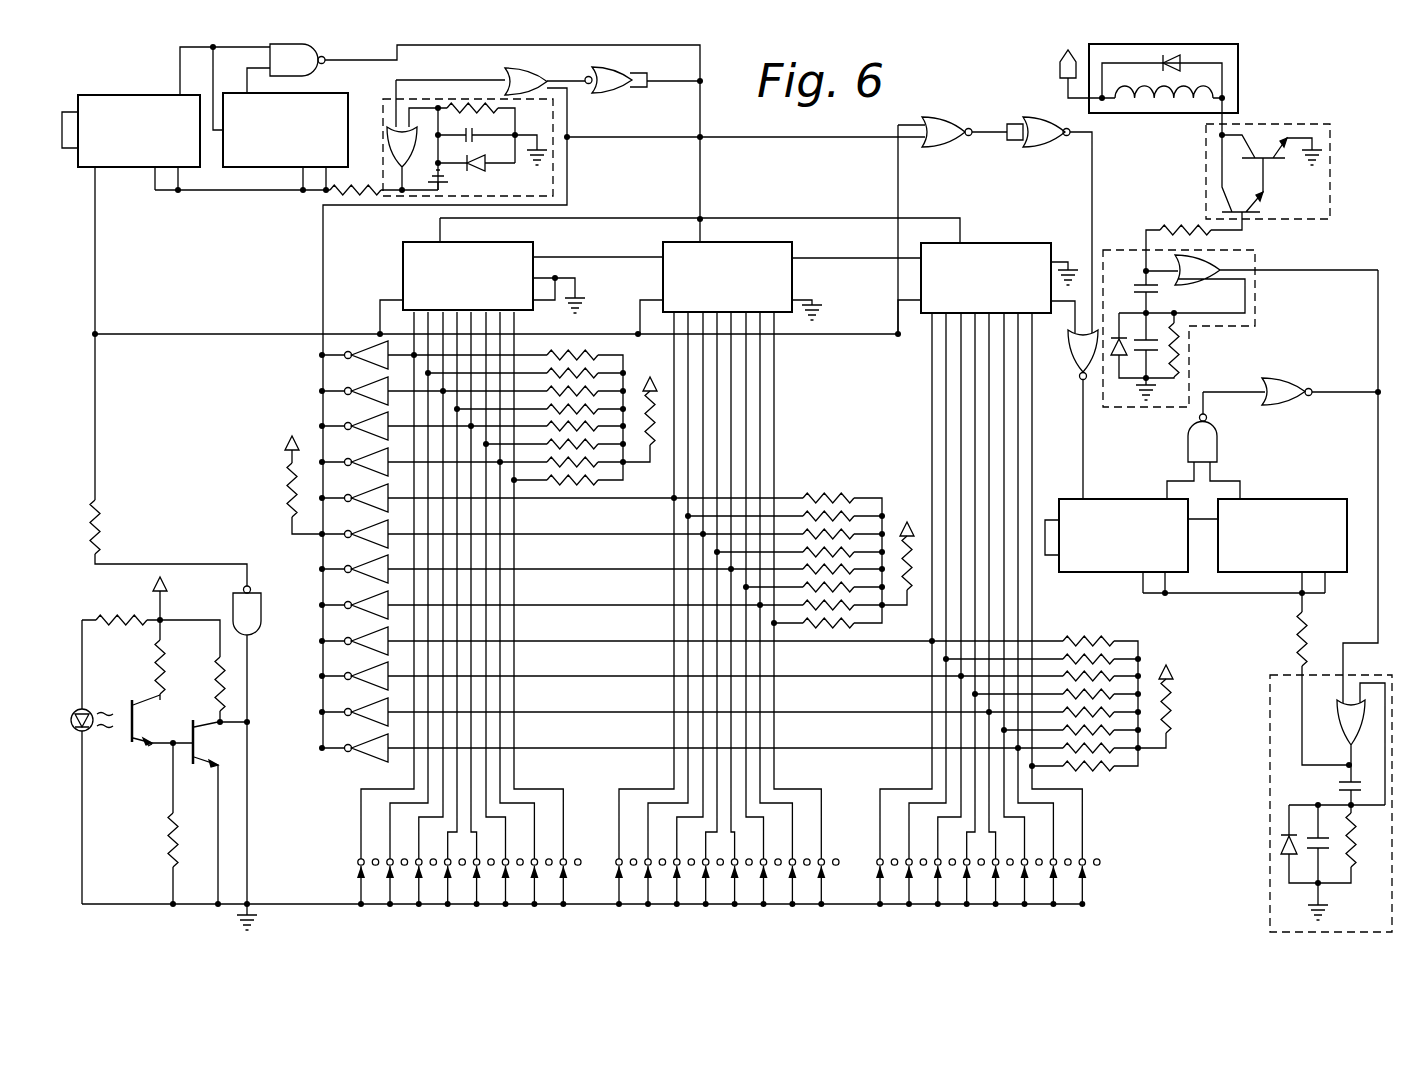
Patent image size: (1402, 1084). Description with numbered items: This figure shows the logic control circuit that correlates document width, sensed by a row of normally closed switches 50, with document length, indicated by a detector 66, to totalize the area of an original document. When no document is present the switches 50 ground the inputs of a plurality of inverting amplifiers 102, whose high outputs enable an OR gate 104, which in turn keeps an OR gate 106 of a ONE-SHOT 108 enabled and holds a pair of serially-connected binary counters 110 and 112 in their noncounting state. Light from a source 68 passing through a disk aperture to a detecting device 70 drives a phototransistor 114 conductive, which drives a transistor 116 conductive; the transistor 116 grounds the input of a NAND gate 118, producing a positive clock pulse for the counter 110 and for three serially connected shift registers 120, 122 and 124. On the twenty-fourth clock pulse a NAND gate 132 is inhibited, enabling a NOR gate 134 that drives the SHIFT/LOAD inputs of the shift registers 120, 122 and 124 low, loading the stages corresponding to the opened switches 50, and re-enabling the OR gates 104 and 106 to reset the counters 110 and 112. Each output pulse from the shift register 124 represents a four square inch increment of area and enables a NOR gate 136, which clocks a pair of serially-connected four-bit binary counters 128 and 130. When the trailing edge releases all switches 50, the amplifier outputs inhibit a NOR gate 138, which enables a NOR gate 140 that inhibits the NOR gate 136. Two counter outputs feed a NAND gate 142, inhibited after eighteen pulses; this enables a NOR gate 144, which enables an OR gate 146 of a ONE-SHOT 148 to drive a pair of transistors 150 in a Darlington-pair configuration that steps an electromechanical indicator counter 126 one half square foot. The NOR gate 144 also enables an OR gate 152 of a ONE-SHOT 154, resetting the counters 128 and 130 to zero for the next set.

The switches 50 is at (446, 906).
The detector 66 is at (153, 742).
The source 68 is at (88, 733).
The detecting device 70 is at (148, 746).
The inverting amplifiers 102 is at (360, 464).
The OR gate 104 is at (535, 68).
The OR gate 106 is at (403, 190).
The ONE-SHOT 108 is at (553, 188).
The binary counter 110 is at (140, 83).
The binary counter 112 is at (322, 93).
The phototransistor 114 is at (131, 702).
The transistor 116 is at (198, 724).
The NAND gate 118 is at (258, 606).
The shift register 120 is at (522, 243).
The shift register 122 is at (782, 243).
The shift register 124 is at (1004, 247).
The indicator counter 126 is at (1240, 70).
The binary counter 128 is at (1134, 494).
The binary counter 130 is at (1296, 494).
The NAND gate 132 is at (323, 56).
The NOR gate 134 is at (616, 92).
The NOR gate 136 is at (1077, 373).
The NOR gate 138 is at (940, 116).
The NOR gate 140 is at (1032, 148).
The NAND gate 142 is at (1220, 443).
The NOR gate 144 is at (1287, 406).
The OR gate 146 is at (1192, 282).
The ONE-SHOT 148 is at (1240, 328).
The transistors 150 is at (1330, 190).
The OR gate 152 is at (1342, 730).
The ONE-SHOT 154 is at (1300, 803).